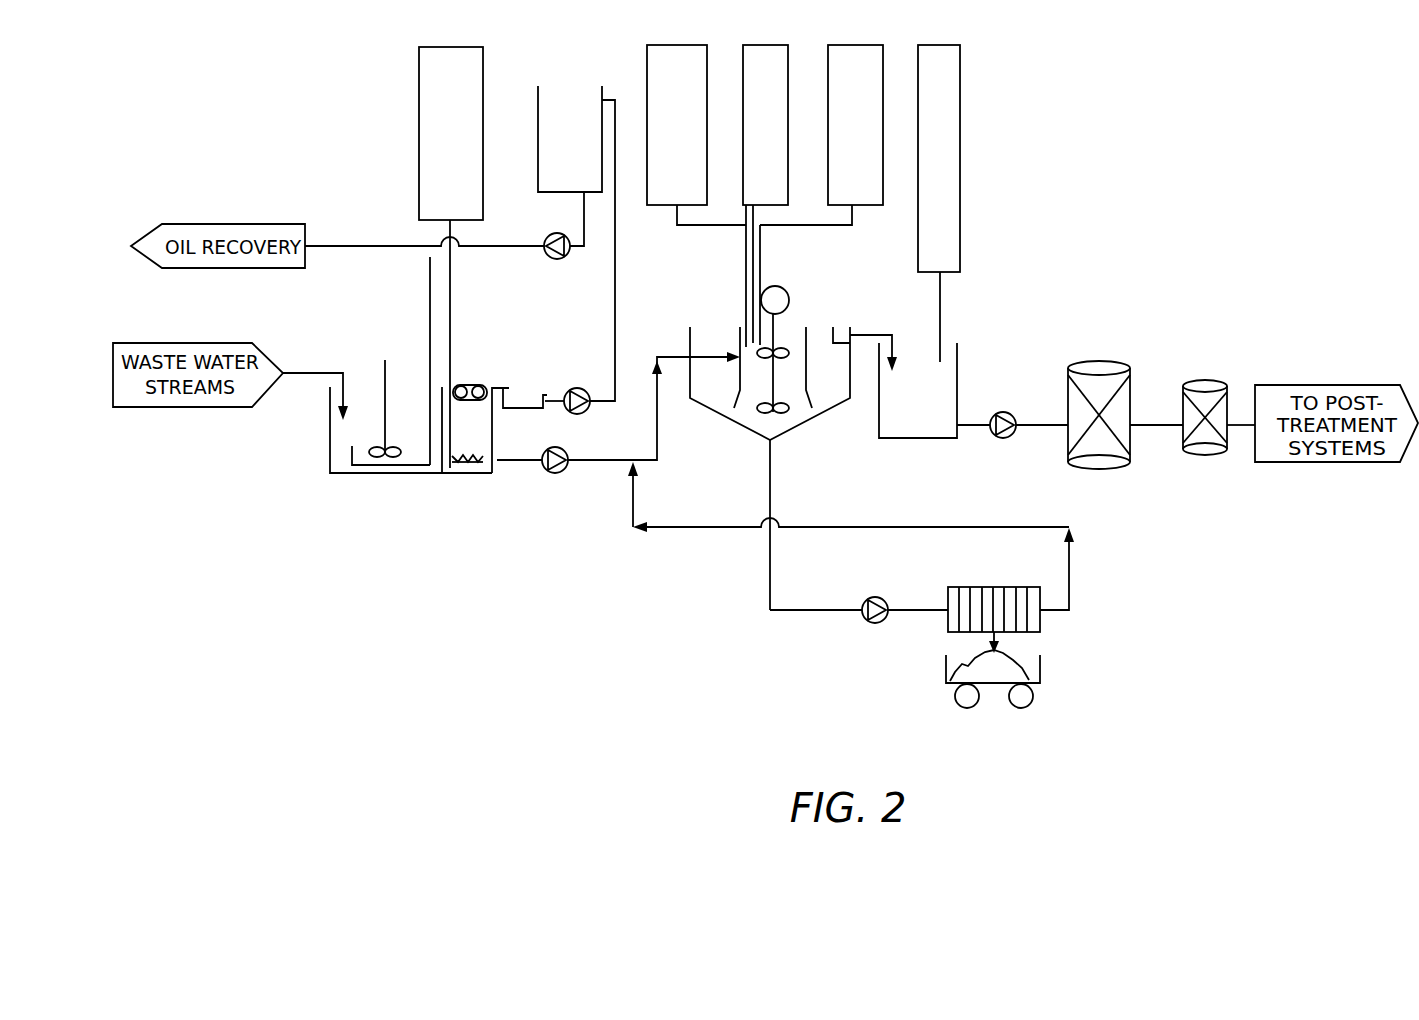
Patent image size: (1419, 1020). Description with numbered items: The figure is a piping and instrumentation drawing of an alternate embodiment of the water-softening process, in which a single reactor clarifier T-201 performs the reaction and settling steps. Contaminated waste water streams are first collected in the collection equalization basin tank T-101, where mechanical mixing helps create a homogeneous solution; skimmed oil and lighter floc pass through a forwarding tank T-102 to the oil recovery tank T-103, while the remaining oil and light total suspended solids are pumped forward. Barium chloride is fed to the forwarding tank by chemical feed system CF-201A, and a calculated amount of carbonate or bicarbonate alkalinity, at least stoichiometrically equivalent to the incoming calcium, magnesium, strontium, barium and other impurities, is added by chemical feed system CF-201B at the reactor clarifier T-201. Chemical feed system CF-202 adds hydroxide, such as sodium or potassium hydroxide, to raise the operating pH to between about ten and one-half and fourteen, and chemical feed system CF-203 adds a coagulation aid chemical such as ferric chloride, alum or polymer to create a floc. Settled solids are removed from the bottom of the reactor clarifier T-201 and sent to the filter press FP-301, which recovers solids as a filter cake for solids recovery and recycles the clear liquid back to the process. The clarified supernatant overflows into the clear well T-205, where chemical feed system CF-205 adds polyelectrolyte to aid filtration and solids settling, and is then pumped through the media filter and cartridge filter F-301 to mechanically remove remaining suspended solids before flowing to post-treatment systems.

The collection equalization basin tank T-101 is at (504, 449).
The forwarding tank T-102 is at (540, 321).
The oil recovery tank T-103 is at (556, 114).
The chemical feed system CF-201A is at (436, 257).
The chemical feed system CF-201B is at (684, 135).
The chemical feed system CF-202 is at (753, 196).
The chemical feed system CF-203 is at (821, 135).
The chemical feed system CF-205 is at (928, 203).
The reactor clarifier T-201 is at (872, 448).
The clear well T-205 is at (973, 390).
The filter F-301 is at (1185, 458).
The filter press FP-301 is at (935, 585).